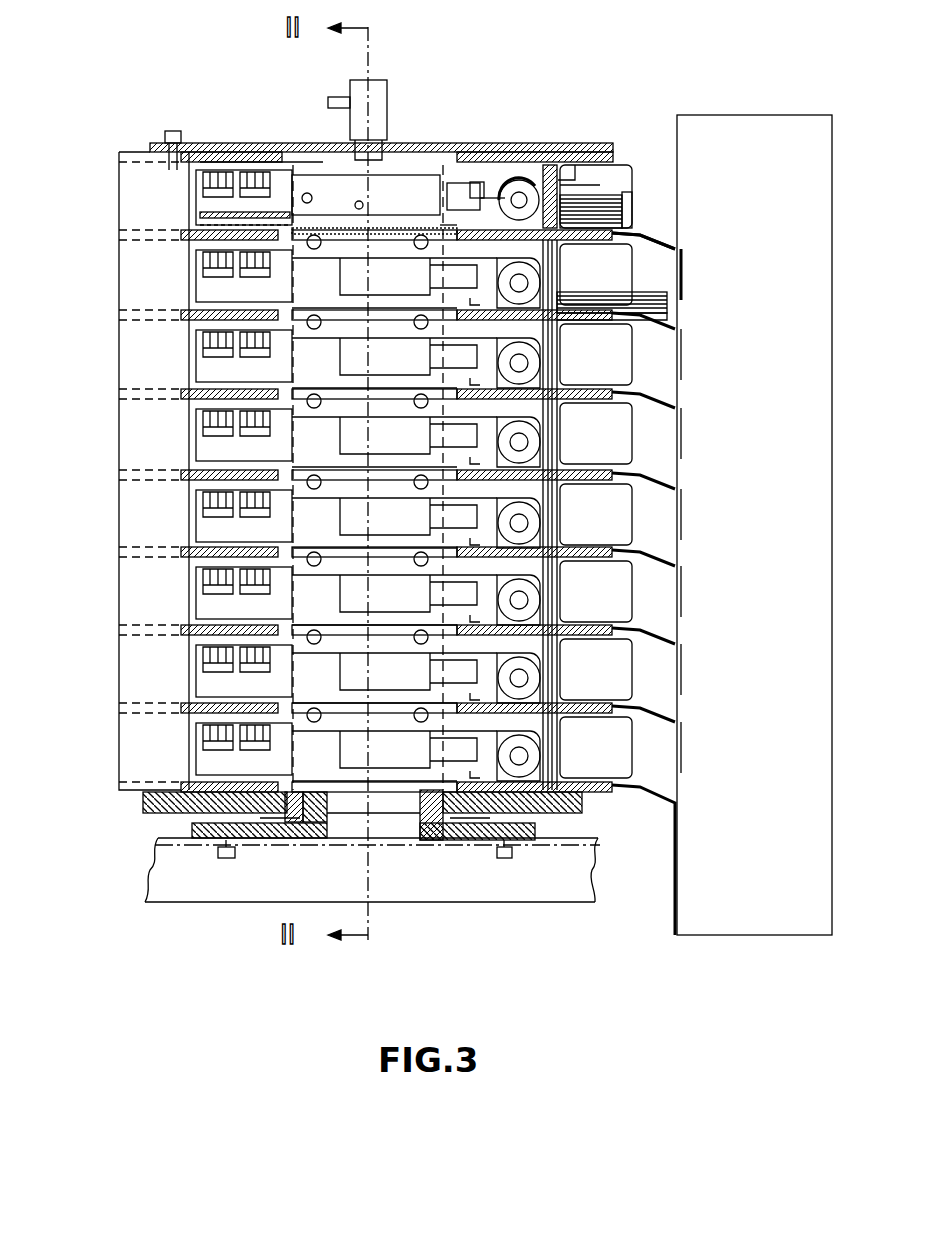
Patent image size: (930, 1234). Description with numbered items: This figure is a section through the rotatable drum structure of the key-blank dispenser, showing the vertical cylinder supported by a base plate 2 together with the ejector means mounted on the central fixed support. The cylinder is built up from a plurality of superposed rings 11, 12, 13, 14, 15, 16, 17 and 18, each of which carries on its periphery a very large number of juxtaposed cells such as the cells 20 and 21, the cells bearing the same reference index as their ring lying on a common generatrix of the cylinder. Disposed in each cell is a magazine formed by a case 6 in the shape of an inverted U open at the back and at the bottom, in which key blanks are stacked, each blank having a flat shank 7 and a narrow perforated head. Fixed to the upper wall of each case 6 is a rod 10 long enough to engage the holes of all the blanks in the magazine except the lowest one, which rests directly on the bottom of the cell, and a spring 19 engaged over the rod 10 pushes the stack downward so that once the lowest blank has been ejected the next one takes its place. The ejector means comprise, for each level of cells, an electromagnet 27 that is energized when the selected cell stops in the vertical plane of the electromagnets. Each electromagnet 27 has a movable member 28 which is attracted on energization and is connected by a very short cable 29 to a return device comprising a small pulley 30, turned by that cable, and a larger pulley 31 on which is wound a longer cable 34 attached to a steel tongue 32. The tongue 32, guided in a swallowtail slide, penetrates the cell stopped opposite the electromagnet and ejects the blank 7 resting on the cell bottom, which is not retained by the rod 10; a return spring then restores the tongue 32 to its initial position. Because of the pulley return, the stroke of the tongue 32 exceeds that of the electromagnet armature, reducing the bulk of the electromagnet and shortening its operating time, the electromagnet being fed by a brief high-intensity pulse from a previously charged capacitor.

The base plate 2 is at (485, 840).
The case 6 is at (622, 196).
The flat shank 7 is at (608, 197).
The rod 10 is at (560, 172).
The ring 11 is at (183, 240).
The ring 12 is at (183, 322).
The ring 13 is at (183, 398).
The ring 14 is at (183, 478).
The ring 15 is at (183, 556).
The ring 16 is at (183, 635).
The ring 17 is at (183, 703).
The ring 18 is at (183, 782).
The spring 19 is at (558, 178).
The cell 20 is at (96, 752).
The cell 21 is at (605, 232).
The electromagnet 27 is at (412, 207).
The movable member 28 is at (452, 188).
The cable 29 is at (488, 192).
The small pulley 30 is at (513, 198).
The larger pulley 31 is at (530, 195).
The steel tongue 32 is at (390, 232).
The longer cable 34 is at (455, 226).